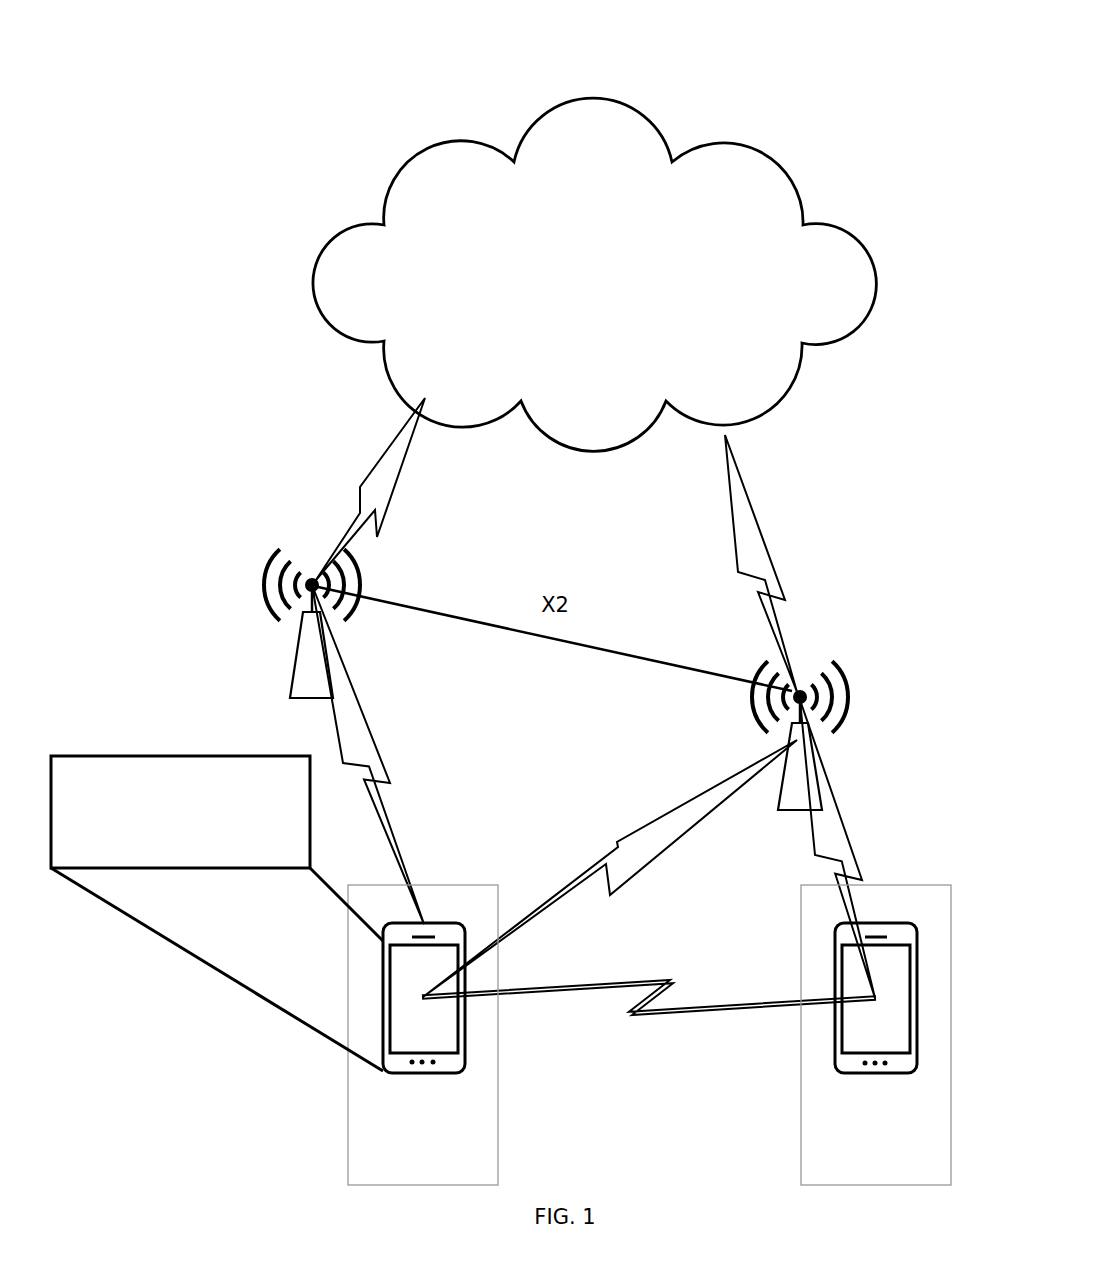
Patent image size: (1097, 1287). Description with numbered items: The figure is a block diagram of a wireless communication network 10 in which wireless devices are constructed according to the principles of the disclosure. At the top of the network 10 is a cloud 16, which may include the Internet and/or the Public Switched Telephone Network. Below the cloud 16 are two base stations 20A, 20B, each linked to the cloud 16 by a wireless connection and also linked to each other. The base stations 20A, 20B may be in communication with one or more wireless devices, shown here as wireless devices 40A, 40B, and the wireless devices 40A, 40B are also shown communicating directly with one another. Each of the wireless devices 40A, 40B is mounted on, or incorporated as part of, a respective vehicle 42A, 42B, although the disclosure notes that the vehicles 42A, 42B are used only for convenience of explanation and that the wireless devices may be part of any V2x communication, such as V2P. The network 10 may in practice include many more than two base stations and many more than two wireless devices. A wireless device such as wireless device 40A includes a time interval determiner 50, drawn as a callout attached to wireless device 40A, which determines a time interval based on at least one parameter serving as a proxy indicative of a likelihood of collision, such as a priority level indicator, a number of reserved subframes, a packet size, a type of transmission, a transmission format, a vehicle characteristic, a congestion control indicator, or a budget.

The wireless communication network 10 is at (762, 100).
The cloud 16 is at (594, 274).
The base station 20A is at (334, 623).
The base station 20B is at (837, 735).
The wireless device 40A is at (424, 998).
The wireless device 40B is at (876, 998).
The vehicle 42A is at (423, 1035).
The vehicle 42B is at (876, 1035).
The time interval determiner 50 is at (217, 913).